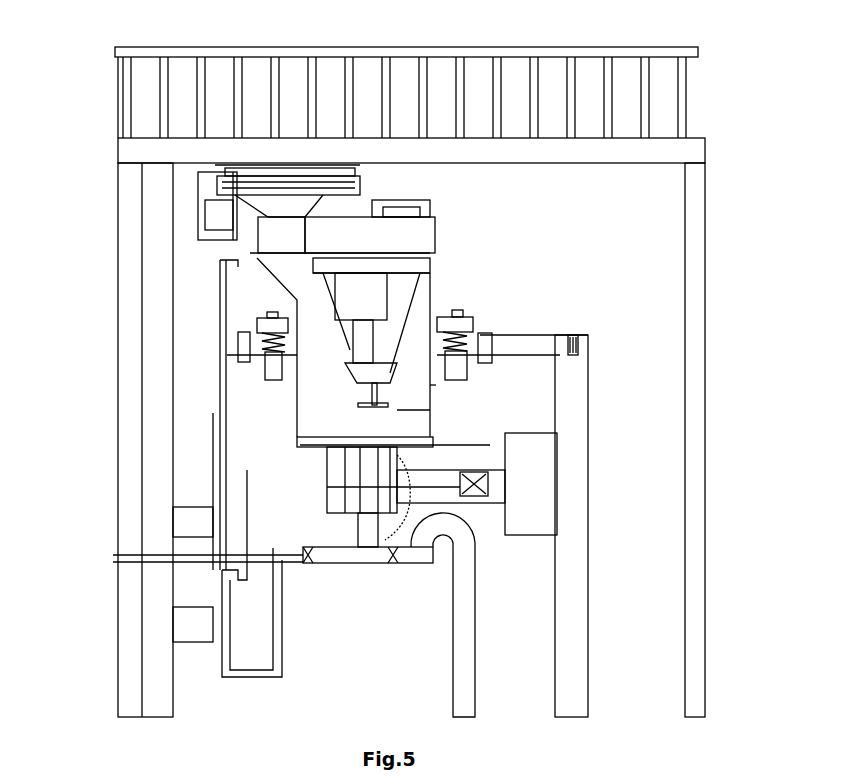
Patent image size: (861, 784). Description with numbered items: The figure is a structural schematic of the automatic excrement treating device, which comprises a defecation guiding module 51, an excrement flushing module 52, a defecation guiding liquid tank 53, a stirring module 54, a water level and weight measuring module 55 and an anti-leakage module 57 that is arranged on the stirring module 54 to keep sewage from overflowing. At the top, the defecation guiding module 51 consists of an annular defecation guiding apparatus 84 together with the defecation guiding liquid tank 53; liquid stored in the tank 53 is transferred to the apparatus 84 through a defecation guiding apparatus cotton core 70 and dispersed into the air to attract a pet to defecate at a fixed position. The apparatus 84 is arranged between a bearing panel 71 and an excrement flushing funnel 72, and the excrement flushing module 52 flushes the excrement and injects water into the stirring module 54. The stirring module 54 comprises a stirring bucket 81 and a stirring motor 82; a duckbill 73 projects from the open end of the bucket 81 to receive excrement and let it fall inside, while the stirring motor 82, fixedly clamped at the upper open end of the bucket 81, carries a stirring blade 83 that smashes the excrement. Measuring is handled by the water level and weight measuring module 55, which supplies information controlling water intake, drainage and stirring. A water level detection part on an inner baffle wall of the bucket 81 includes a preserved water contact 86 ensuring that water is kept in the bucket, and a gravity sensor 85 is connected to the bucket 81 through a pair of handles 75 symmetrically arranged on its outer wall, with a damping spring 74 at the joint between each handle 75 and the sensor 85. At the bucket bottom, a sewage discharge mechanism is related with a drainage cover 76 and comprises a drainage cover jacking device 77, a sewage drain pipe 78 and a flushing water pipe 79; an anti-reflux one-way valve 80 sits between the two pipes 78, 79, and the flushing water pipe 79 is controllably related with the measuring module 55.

The defecation guiding module 51 is at (289, 228).
The excrement flushing module 52 is at (213, 211).
The defecation guiding liquid tank 53 is at (228, 236).
The stirring module 54 is at (372, 287).
The water level and weight measuring module 55 is at (507, 355).
The anti-leakage module 57 is at (434, 265).
The defecation guiding apparatus cotton core 70 is at (283, 193).
The bearing panel 71 is at (406, 92).
The excrement flushing funnel 72 is at (231, 169).
The duckbill 73 is at (283, 271).
The damping spring 74 is at (254, 343).
The handle 75 is at (475, 323).
The drainage cover 76 is at (326, 413).
The drainage cover jacking device 77 is at (341, 458).
The sewage drain pipe 78 is at (452, 627).
The flushing water pipe 79 is at (221, 664).
The anti-reflux one-way valve 80 is at (273, 606).
The stirring bucket 81 is at (529, 351).
The stirring motor 82 is at (350, 366).
The stirring blade 83 is at (491, 481).
The annular defecation guiding apparatus 84 is at (485, 141).
The gravity sensor 85 is at (624, 357).
The preserved water contact 86 is at (306, 396).